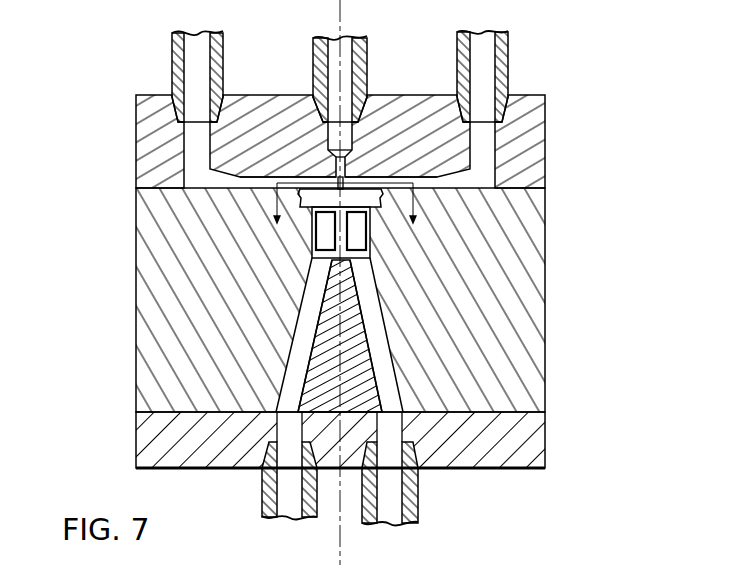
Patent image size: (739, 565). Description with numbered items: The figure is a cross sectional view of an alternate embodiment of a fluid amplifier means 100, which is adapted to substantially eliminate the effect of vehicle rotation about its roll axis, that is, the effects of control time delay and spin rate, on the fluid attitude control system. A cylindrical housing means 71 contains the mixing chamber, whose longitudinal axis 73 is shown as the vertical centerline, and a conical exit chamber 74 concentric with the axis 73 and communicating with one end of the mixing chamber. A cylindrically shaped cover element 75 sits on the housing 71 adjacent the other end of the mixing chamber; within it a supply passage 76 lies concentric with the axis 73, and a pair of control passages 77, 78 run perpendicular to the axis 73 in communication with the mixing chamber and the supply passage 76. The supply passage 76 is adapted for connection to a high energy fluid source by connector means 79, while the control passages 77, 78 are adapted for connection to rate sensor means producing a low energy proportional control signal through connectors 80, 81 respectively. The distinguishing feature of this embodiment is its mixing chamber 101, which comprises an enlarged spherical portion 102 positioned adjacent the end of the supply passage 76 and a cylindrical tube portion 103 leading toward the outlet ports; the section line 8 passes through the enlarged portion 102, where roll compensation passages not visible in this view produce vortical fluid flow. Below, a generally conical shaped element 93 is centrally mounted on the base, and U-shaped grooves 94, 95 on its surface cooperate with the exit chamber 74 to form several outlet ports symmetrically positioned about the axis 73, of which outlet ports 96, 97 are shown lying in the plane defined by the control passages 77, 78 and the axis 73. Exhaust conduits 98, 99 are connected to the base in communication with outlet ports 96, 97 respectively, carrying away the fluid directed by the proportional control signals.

The fluid amplifier means 100 is at (130, 57).
The longitudinal axis 73 is at (342, 26).
The cover element 75 is at (545, 123).
The connector 80 is at (221, 66).
The connector means 79 is at (366, 82).
The connector 81 is at (510, 54).
The supply passage 76 is at (347, 163).
The control passage 77 is at (263, 178).
The control passage 78 is at (388, 178).
The housing means 71 is at (136, 363).
The section line 8- 8 is at (344, 215).
The enlarged spherical portion 102 is at (373, 207).
The conical exit chamber 74 is at (388, 320).
The outlet port 97 is at (315, 294).
The cylindrical tube portion 103 is at (312, 240).
The mixing chamber 101 is at (372, 240).
The groove 94 is at (340, 336).
The conical shaped element 93 is at (366, 387).
The groove 95 is at (317, 353).
The outlet port 96 is at (387, 361).
The exhaust conduit 99 is at (262, 480).
The exhaust conduit 98 is at (418, 494).